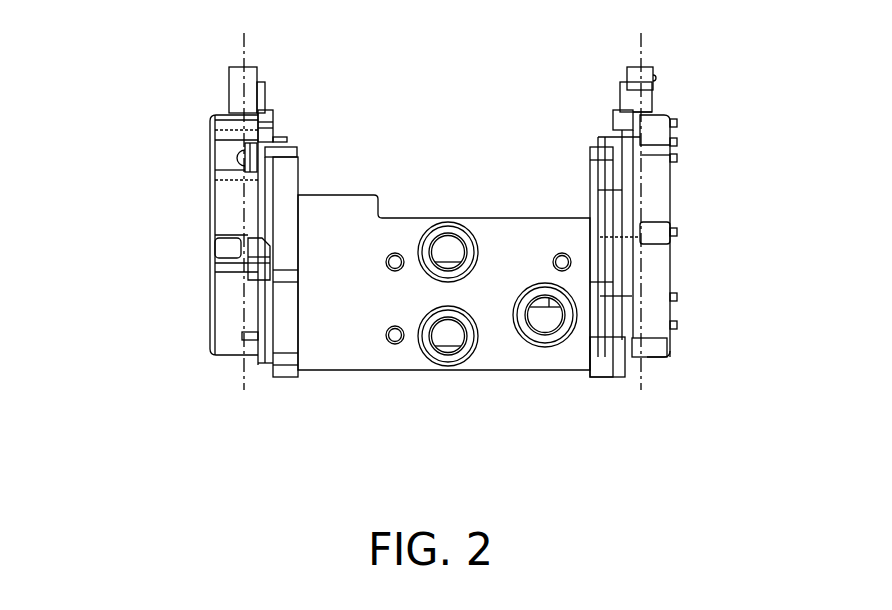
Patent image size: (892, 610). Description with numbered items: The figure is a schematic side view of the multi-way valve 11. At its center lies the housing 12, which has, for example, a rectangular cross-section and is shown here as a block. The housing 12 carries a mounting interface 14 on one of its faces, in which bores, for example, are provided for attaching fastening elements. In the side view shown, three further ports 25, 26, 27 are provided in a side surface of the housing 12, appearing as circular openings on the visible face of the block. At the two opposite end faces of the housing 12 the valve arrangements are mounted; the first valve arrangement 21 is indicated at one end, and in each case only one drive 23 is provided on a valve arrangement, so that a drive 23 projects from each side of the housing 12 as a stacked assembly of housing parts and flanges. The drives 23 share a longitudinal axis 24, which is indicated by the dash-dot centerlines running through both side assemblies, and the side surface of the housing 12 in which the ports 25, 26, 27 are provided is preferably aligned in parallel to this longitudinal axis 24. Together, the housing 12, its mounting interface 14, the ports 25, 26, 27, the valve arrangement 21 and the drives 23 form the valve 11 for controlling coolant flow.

The valve 11 is at (435, 273).
The housing 12 is at (363, 360).
The mounting interface 14 is at (333, 328).
The first valve arrangement 21 is at (648, 398).
The drive 23 is at (183, 186).
The longitudinal axis 24 is at (242, 363).
The port 25 is at (552, 334).
The port 26 is at (447, 352).
The port 27 is at (448, 243).